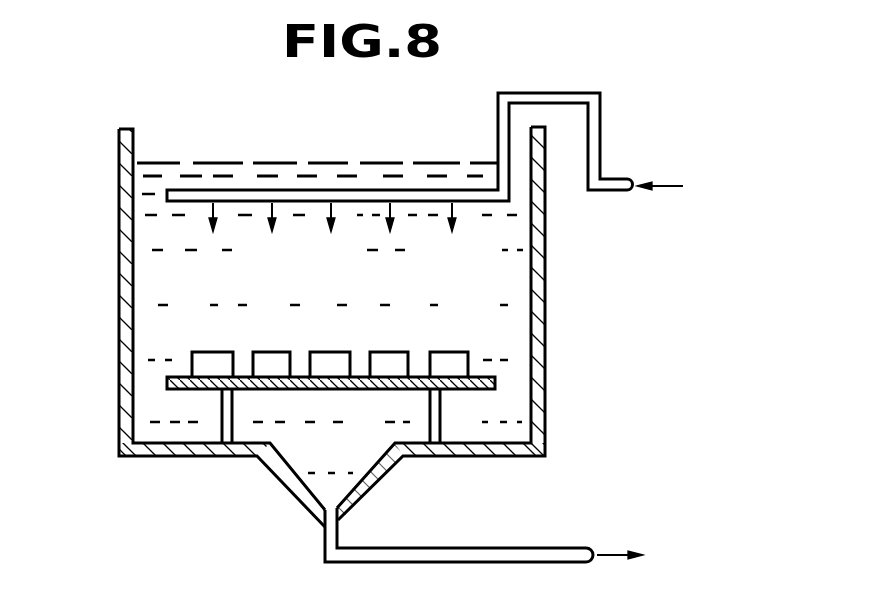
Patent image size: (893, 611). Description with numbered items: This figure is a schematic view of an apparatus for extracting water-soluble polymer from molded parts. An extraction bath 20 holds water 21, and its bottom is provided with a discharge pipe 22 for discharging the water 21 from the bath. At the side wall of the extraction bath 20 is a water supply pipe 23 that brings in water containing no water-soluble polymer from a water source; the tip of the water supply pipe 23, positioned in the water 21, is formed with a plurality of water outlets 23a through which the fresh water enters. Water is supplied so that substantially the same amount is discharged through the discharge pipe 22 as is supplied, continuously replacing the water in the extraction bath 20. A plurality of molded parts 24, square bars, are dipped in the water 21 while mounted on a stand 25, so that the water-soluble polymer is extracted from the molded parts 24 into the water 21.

The extraction bath 20 is at (121, 183).
The water 21 is at (140, 296).
The discharge pipe 22 is at (427, 555).
The water supply pipe 23 is at (605, 131).
The water outlets 23a is at (275, 205).
The molded parts 24 is at (272, 355).
The stand 25 is at (473, 385).